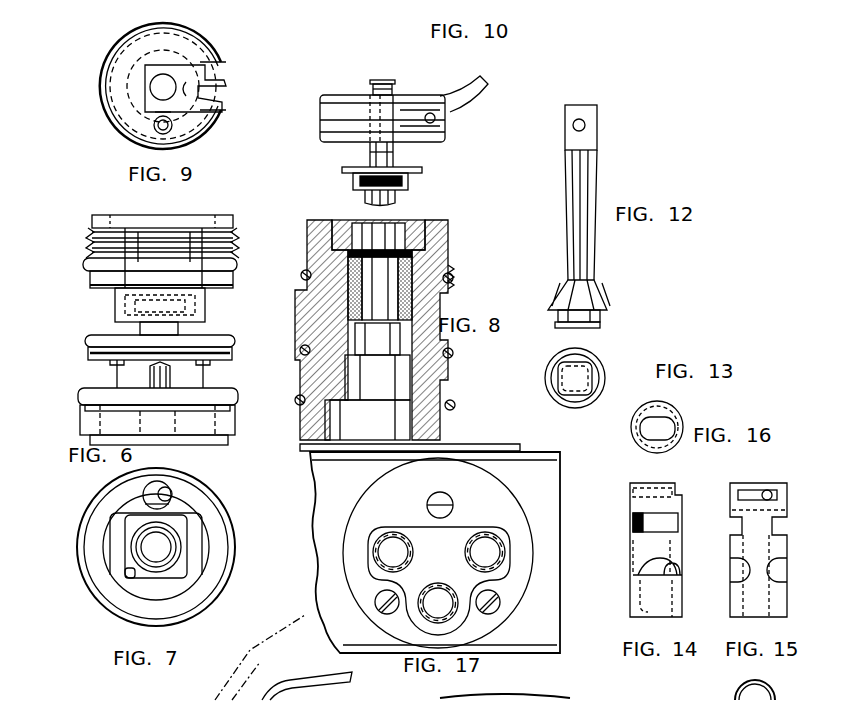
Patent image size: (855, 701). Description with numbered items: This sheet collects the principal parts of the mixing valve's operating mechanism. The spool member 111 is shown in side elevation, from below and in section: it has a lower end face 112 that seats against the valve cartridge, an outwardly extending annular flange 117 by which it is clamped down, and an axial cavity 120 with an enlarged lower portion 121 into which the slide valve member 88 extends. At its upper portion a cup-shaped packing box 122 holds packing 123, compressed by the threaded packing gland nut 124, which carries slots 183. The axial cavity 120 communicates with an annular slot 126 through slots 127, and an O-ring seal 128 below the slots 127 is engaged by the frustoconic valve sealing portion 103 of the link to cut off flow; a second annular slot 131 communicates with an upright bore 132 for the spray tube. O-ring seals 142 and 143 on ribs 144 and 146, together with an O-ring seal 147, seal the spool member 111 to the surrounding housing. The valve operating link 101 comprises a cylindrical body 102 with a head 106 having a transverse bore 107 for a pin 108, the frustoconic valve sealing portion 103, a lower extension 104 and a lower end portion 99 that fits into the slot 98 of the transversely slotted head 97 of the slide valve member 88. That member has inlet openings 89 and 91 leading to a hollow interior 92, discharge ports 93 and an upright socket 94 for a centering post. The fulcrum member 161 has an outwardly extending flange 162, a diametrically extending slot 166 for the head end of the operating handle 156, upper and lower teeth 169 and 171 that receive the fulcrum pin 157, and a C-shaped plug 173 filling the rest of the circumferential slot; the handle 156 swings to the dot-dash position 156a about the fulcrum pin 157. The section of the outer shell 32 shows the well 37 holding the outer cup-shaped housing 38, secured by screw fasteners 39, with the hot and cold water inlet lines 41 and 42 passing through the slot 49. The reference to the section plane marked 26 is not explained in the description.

In FIG. 9, the fulcrum member 161 is at (146, 48).
In FIG. 10, the fulcrum member 161 is at (322, 128).
In FIG. 9, the diametrically extending slot 166 is at (205, 82).
In FIG. 10, the diametrically extending slot 166 is at (362, 158).
In FIG. 9, the slots 183 is at (200, 86).
In FIG. 10, the slots 183 is at (400, 158).
In FIG. 9, the packing gland nut 124 is at (196, 100).
In FIG. 10, the packing gland nut 124 is at (405, 176).
In FIG. 10, the C-shaped plug 173 is at (318, 116).
In FIG. 10, the pin 108 is at (374, 78).
In FIG. 10, the fulcrum pin 157 is at (426, 112).
In FIG. 10, the upper tooth 169 is at (475, 88).
In FIG. 10, the operating handle 156 is at (446, 112).
In FIG. 10, the lower tooth 171 is at (440, 132).
In FIG. 10, the outwardly extending flange 162 is at (332, 136).
In FIG. 10, the valve operating link 101 is at (386, 206).
In FIG. 12, the valve operating link 101 is at (645, 173).
In FIG. 13, the valve operating link 101 is at (549, 374).
In FIG. 12, the head 106 is at (584, 140).
In FIG. 12, the transverse bore 107 is at (582, 122).
In FIG. 12, the cylindrical body 102 is at (572, 214).
In FIG. 12, the frustoconic valve sealing portion 103 is at (600, 296).
In FIG. 13, the frustoconic valve sealing portion 103 is at (563, 356).
In FIG. 12, the lower extension 104 is at (552, 312).
In FIG. 12, the lower end portion 99 is at (588, 328).
In FIG. 13, the lower end portion 99 is at (588, 366).
In FIG. 16, the slide valve member 88 is at (700, 405).
In FIG. 14, the slide valve member 88 is at (714, 501).
In FIG. 15, the slide valve member 88 is at (822, 504).
In FIG. 16, the slot 98 is at (670, 428).
In FIG. 14, the slot 98 is at (672, 484).
In FIG. 15, the slot 98 is at (770, 490).
In FIG. 14, the transversely slotted head 97 is at (648, 486).
In FIG. 15, the transversely slotted head 97 is at (737, 490).
In FIG. 14, the ports 93 is at (632, 520).
In FIG. 15, the ports 93 is at (784, 536).
In FIG. 14, the section line 26 is at (615, 548).
In FIG. 15, the section line 26 is at (701, 556).
In FIG. 14, the inlet opening 89 is at (682, 560).
In FIG. 15, the inlet opening 89 is at (735, 572).
In FIG. 14, the upright socket 94 is at (640, 616).
In FIG. 15, the upright socket 94 is at (725, 700).
In FIG. 15, the inlet opening 91 is at (782, 570).
In FIG. 15, the hollow interior 92 is at (765, 686).
In FIG. 6, the spool member 111 is at (200, 210).
In FIG. 8, the spool member 111 is at (498, 260).
In FIG. 7, the spool member 111 is at (266, 505).
In FIG. 6, the rib 144 is at (92, 262).
In FIG. 8, the rib 144 is at (305, 245).
In FIG. 6, the O-ring seal 142 is at (232, 274).
In FIG. 8, the O-ring seal 142 is at (455, 281).
In FIG. 6, the annular slot 126 is at (206, 304).
In FIG. 8, the annular slot 126 is at (432, 312).
In FIG. 6, the slots 127 is at (136, 330).
In FIG. 6, the O-ring seal 143 is at (90, 347).
In FIG. 8, the O-ring seal 143 is at (454, 354).
In FIG. 6, the rib 146 is at (92, 358).
In FIG. 8, the rib 146 is at (312, 340).
In FIG. 6, the annular slot 131 is at (212, 372).
In FIG. 8, the annular slot 131 is at (432, 381).
In FIG. 6, the upright bore 132 is at (100, 382).
In FIG. 8, the upright bore 132 is at (442, 440).
In FIG. 7, the upright bore 132 is at (170, 500).
In FIG. 6, the O-ring seal 147 is at (232, 396).
In FIG. 8, the O-ring seal 147 is at (456, 405).
In FIG. 6, the enlarged lower portion 121 is at (240, 408).
In FIG. 8, the enlarged lower portion 121 is at (345, 382).
In FIG. 7, the enlarged lower portion 121 is at (135, 580).
In FIG. 6, the annular flange 117 is at (82, 420).
In FIG. 8, the annular flange 117 is at (452, 426).
In FIG. 7, the annular flange 117 is at (232, 560).
In FIG. 6, the lower end face 112 is at (218, 436).
In FIG. 8, the lower end face 112 is at (312, 447).
In FIG. 8, the axial cavity 120 is at (338, 335).
In FIG. 8, the packing 123 is at (348, 262).
In FIG. 8, the packing box 122 is at (344, 290).
In FIG. 8, the O-ring seal 128 is at (377, 377).
In FIG. 7, the O-ring seal 128 is at (126, 551).
In FIG. 17, the outer shell 32 is at (550, 508).
In FIG. 17, the well 37 is at (520, 532).
In FIG. 17, the outer cup-shaped housing 38 is at (420, 535).
In FIG. 17, the hot water inlet line 41 is at (376, 560).
In FIG. 17, the cold water inlet line 42 is at (505, 556).
In FIG. 17, the slot 49 is at (385, 578).
In FIG. 17, the screw fasteners 39 is at (455, 503).
In FIG. 17, the dot-dash line position of handle 156a is at (270, 655).